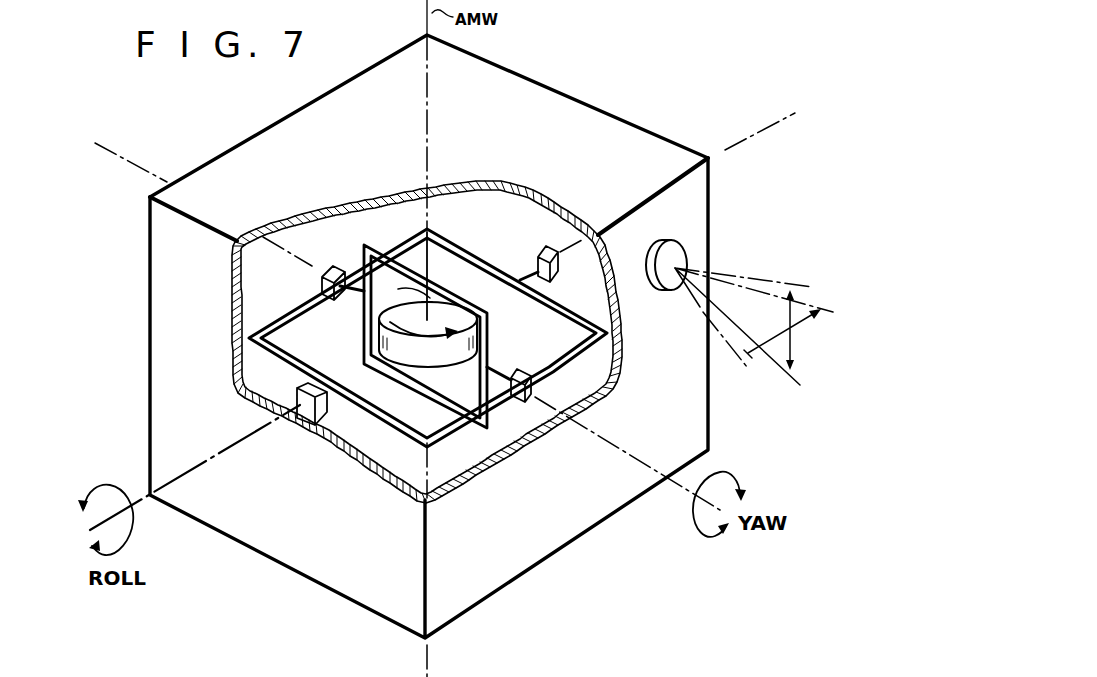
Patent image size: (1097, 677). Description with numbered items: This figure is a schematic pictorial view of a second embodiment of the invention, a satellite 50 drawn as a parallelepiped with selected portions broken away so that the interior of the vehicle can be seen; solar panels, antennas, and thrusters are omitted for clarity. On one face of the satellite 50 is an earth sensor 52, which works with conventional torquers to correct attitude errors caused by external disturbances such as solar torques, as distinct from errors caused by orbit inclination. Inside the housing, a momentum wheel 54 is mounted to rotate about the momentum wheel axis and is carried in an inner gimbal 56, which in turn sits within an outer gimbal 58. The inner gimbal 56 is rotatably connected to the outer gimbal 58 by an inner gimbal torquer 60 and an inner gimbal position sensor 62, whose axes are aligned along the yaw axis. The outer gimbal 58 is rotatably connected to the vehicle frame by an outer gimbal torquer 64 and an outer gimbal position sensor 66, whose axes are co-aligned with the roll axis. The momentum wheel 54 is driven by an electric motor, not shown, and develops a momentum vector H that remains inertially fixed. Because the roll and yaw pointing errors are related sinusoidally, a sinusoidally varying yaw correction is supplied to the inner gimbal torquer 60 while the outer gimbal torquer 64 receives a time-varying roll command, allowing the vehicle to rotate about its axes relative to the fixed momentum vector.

The satellite 50 is at (610, 96).
The earth sensor 52 is at (688, 252).
The momentum wheel 54 is at (395, 320).
The inner gimbal 56 is at (472, 278).
The outer gimbal 58 is at (573, 314).
The inner gimbal torquer 60 is at (535, 396).
The inner gimbal position sensor 62 is at (334, 264).
The outer gimbal torquer 64 is at (553, 243).
The outer gimbal position sensor 66 is at (300, 412).